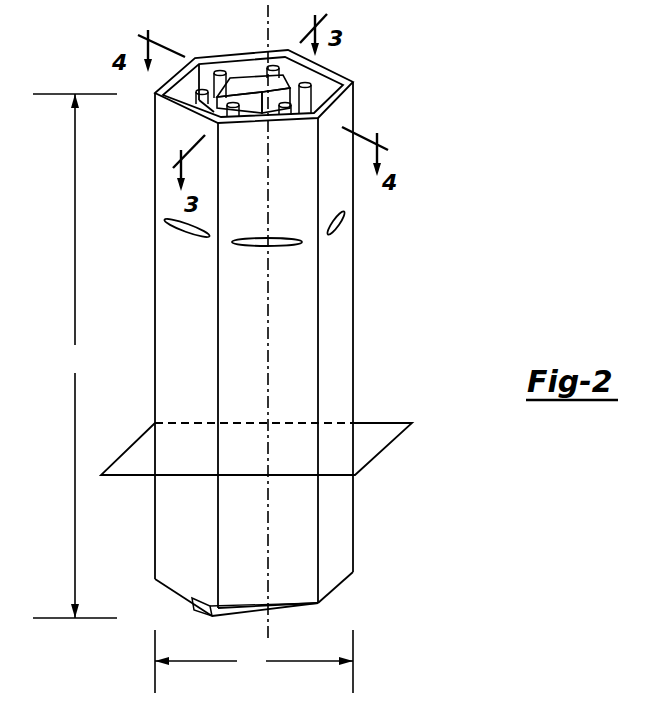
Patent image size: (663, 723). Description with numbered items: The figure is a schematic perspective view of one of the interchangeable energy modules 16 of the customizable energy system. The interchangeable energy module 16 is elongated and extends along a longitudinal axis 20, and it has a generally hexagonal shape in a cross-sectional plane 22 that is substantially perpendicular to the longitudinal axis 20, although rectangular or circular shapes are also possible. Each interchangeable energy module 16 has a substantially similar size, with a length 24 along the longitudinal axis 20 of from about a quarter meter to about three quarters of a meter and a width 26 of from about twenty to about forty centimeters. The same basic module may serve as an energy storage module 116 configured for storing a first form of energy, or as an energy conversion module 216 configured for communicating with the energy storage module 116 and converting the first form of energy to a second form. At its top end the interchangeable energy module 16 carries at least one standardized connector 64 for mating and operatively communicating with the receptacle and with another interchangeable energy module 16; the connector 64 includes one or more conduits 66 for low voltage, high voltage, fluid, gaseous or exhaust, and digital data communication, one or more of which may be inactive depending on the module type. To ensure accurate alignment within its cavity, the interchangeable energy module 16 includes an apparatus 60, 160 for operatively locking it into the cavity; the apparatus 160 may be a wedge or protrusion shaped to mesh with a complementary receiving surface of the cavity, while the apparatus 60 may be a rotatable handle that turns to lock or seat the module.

The interchangeable energy module 16 is at (334, 333).
The energy storage module 116 is at (334, 333).
The energy conversion module 216 is at (353, 297).
The longitudinal axis 20 is at (270, 353).
The cross-sectional plane 22 is at (385, 450).
The length 24 is at (75, 356).
The width 26 is at (254, 661).
The apparatus 60 is at (194, 610).
The connector 64 is at (321, 86).
The conduits 66 is at (197, 94).
The apparatus 160 is at (253, 76).